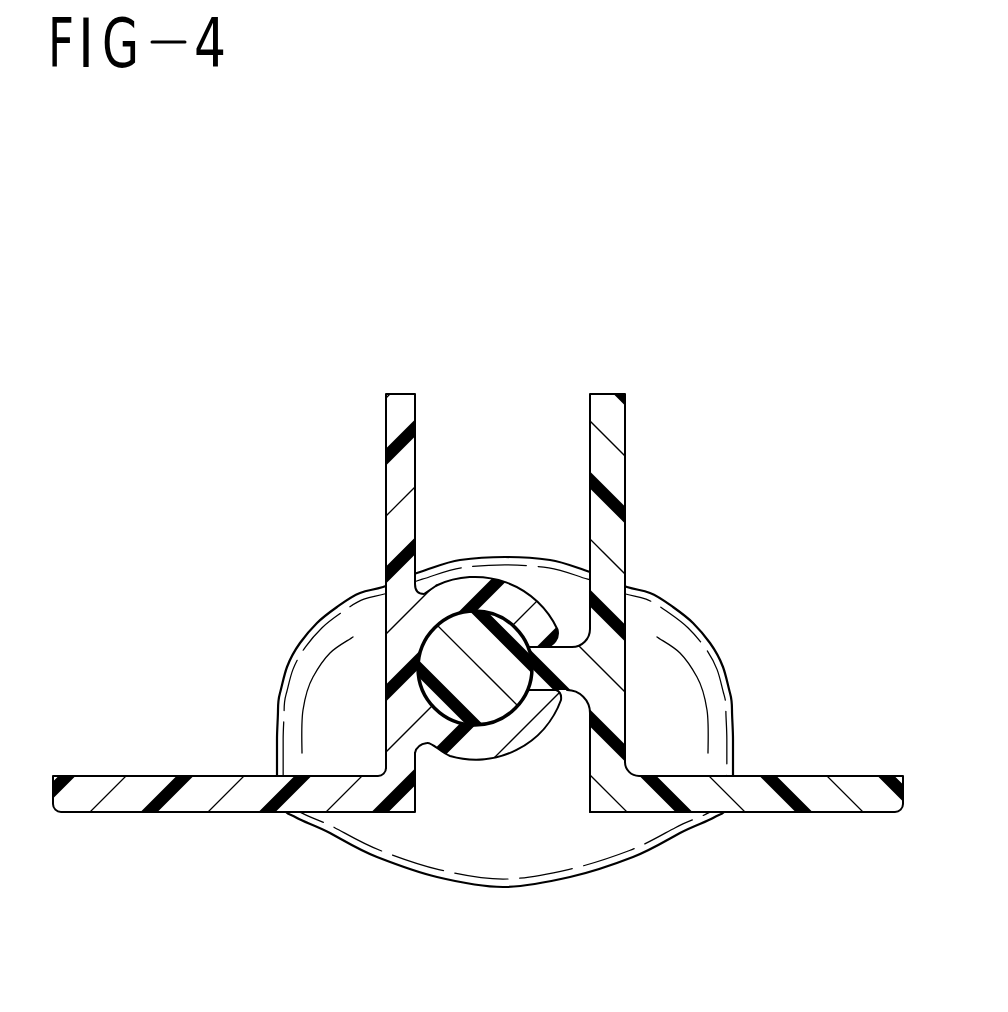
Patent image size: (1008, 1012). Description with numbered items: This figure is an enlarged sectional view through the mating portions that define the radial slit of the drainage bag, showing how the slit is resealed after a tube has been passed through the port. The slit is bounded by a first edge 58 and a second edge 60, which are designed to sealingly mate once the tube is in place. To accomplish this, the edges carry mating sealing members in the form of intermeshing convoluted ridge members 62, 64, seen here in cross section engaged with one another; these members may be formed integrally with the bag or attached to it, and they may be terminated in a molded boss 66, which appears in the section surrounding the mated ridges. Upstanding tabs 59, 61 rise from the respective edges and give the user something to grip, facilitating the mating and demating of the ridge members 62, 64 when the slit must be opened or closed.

The first edge 58 is at (206, 794).
The upstanding tab 59 is at (405, 404).
The second edge 60 is at (825, 795).
The upstanding tab 61 is at (600, 405).
The intermeshing convoluted ridge member 62 is at (503, 608).
The intermeshing convoluted ridge member 64 is at (459, 594).
The molded boss 66 is at (683, 684).